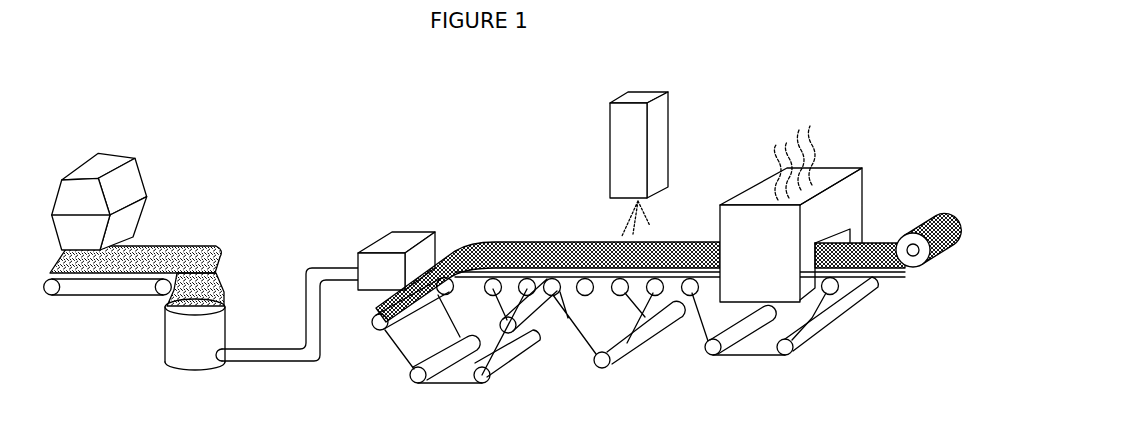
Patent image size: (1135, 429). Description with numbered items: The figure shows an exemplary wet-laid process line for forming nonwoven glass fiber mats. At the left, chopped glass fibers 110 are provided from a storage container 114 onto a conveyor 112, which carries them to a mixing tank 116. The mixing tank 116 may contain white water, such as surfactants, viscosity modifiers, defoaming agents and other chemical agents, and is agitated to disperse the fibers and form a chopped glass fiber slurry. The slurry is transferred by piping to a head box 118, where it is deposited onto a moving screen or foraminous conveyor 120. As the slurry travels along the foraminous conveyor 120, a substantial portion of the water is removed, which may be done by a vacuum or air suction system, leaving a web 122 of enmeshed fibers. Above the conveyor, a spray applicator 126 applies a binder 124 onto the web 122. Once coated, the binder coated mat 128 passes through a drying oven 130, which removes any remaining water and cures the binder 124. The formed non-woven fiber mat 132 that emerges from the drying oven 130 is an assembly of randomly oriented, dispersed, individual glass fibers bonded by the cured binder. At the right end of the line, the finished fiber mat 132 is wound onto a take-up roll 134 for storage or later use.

The chopped glass fibers 110 is at (157, 247).
The conveyor 112 is at (108, 297).
The storage container 114 is at (140, 170).
The mixing tank 116 is at (228, 324).
The head box 118 is at (383, 245).
The foraminous conveyor 120 is at (392, 350).
The web 122 is at (500, 242).
The binder 124 is at (625, 223).
The spray applicator 126 is at (617, 140).
The binder coated mat 128 is at (682, 238).
The drying oven 130 is at (827, 167).
The non-woven fiber mat 132 is at (872, 242).
The take-up roll 134 is at (933, 217).